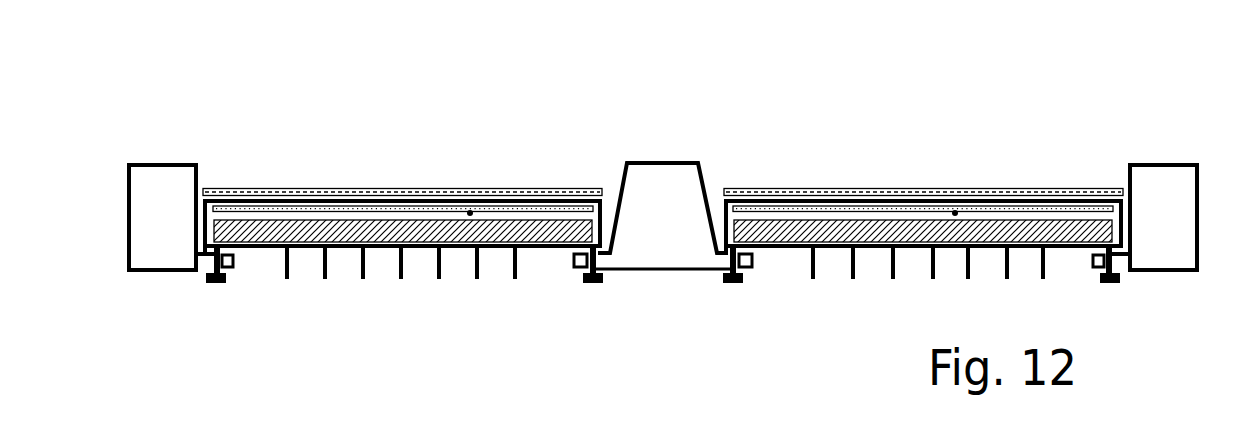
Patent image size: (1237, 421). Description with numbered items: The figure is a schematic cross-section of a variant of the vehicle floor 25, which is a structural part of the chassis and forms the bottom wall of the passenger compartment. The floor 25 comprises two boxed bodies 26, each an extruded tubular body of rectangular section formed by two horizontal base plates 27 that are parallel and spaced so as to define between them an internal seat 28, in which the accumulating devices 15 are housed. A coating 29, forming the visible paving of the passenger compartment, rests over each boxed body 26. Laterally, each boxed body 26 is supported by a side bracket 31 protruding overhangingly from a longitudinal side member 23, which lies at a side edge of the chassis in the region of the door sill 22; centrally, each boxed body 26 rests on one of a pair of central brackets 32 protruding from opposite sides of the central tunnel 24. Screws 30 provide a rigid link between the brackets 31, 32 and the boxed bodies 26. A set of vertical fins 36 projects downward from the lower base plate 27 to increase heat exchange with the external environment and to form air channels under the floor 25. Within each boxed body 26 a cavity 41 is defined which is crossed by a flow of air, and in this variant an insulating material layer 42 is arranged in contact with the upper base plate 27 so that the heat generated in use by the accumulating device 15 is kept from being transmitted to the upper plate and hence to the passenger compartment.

The accumulating device 15 is at (458, 248).
The door sill 22 is at (676, 153).
The longitudinal side member 23 is at (150, 163).
The central tunnel 24 is at (675, 163).
The floor 25 is at (531, 354).
The boxed body 26 is at (663, 188).
The horizontal base plate 27 is at (663, 230).
The internal seat 28 is at (500, 232).
The coating 29 is at (663, 154).
The screw 30 is at (215, 284).
The side bracket 31 is at (233, 268).
The central bracket 32 is at (578, 268).
The vertical fin 36 is at (365, 279).
The cavity 41 is at (470, 211).
The insulating material layer 42 is at (238, 188).